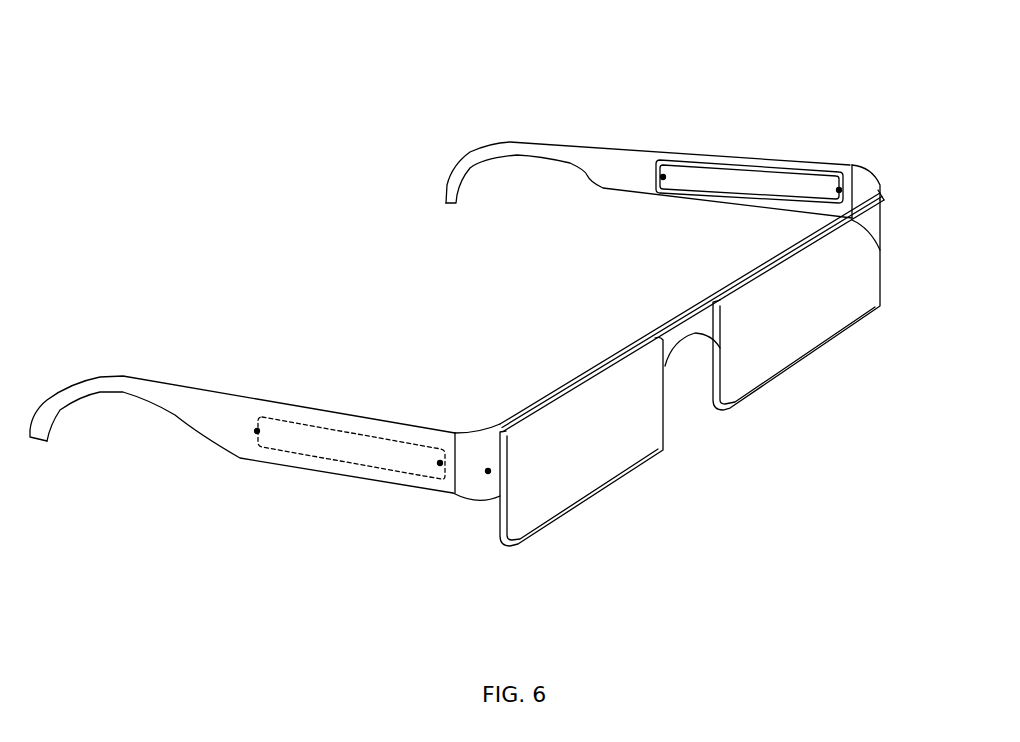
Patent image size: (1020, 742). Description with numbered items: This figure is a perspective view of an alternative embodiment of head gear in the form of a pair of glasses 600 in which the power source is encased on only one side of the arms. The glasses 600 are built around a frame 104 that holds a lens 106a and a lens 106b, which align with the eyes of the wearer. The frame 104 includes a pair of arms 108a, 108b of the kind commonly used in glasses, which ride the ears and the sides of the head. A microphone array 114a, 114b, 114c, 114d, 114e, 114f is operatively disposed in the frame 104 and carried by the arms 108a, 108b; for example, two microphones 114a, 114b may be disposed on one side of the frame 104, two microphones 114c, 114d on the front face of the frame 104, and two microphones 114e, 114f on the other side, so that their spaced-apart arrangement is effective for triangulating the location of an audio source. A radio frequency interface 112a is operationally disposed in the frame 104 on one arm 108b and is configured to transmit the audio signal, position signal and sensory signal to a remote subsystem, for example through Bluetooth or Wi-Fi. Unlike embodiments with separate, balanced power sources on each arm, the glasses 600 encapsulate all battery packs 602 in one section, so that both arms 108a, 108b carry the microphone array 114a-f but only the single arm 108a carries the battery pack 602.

The pair of glasses 600 is at (226, 91).
The frame 104 is at (688, 329).
The lens 106a is at (608, 448).
The lens 106b is at (808, 326).
The arm 108a is at (203, 410).
The arm 108b is at (555, 155).
The radio frequency interface 112a is at (755, 180).
The battery pack 602 is at (335, 442).
The microphone array 114a is at (665, 175).
The microphone array 114b is at (846, 185).
The microphone array 114c is at (884, 196).
The microphone array 114d is at (257, 433).
The microphone array 114e is at (438, 465).
The microphone array 114f is at (492, 478).